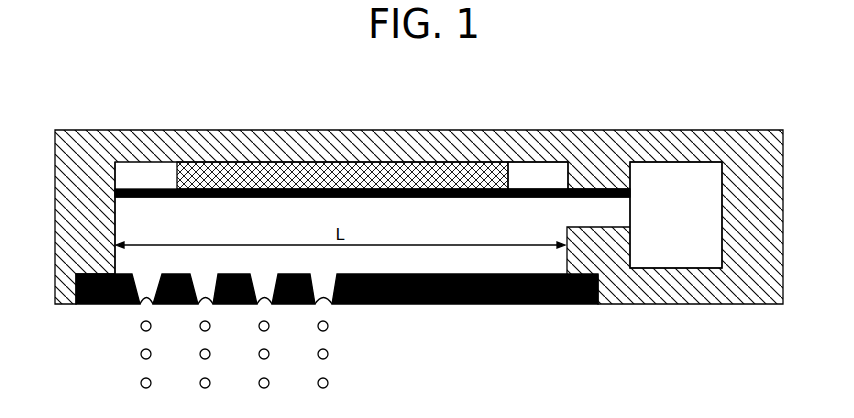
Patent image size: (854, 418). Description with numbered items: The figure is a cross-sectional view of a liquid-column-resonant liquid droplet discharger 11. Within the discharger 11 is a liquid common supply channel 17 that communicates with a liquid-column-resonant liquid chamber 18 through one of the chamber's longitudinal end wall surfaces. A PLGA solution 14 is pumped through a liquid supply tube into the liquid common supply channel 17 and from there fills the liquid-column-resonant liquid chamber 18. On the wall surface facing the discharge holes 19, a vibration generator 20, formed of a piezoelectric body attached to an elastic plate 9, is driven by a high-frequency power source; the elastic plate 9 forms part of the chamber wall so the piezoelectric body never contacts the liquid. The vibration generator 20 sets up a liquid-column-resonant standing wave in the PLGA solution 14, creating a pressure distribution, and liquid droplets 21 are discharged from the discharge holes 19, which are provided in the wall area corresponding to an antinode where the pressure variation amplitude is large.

The elastic plate 9 is at (537, 186).
The liquid-column-resonant liquid droplet discharger 11 is at (755, 130).
The PLGA solution 14 is at (452, 261).
The liquid common supply channel 17 is at (683, 182).
The liquid-column-resonant liquid chamber 18 is at (409, 218).
The discharge holes 19 is at (323, 307).
The vibration generator 20 is at (284, 184).
The liquid droplets 21 is at (329, 383).